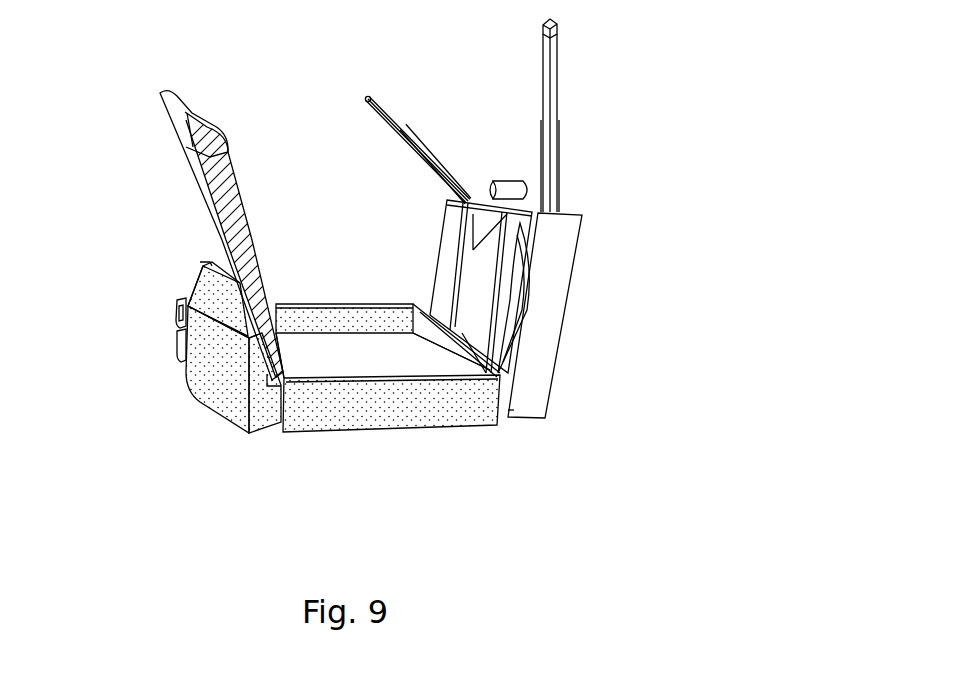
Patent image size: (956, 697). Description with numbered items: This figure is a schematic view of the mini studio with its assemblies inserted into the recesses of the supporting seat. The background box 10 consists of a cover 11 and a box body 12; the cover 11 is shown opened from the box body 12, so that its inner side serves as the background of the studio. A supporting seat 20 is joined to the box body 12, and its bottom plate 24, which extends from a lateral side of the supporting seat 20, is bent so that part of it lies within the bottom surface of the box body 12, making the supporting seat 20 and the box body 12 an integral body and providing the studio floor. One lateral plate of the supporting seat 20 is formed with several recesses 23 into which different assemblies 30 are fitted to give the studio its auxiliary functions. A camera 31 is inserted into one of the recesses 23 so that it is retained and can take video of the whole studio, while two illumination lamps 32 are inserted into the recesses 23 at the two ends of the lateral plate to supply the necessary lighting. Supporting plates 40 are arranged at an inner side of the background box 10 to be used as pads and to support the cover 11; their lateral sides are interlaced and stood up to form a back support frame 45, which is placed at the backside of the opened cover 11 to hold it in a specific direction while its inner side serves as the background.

The background box 10 is at (165, 138).
The cover 11 is at (205, 196).
The box body 12 is at (313, 302).
The supporting seat 20 is at (579, 271).
The recesses 23 is at (468, 197).
The bottom plate 24 is at (356, 355).
The assemblies 30 is at (384, 102).
The camera 31 is at (515, 178).
The illumination lamps 32 is at (402, 127).
The supporting plates 40 is at (216, 393).
The back support frame 45 is at (172, 339).